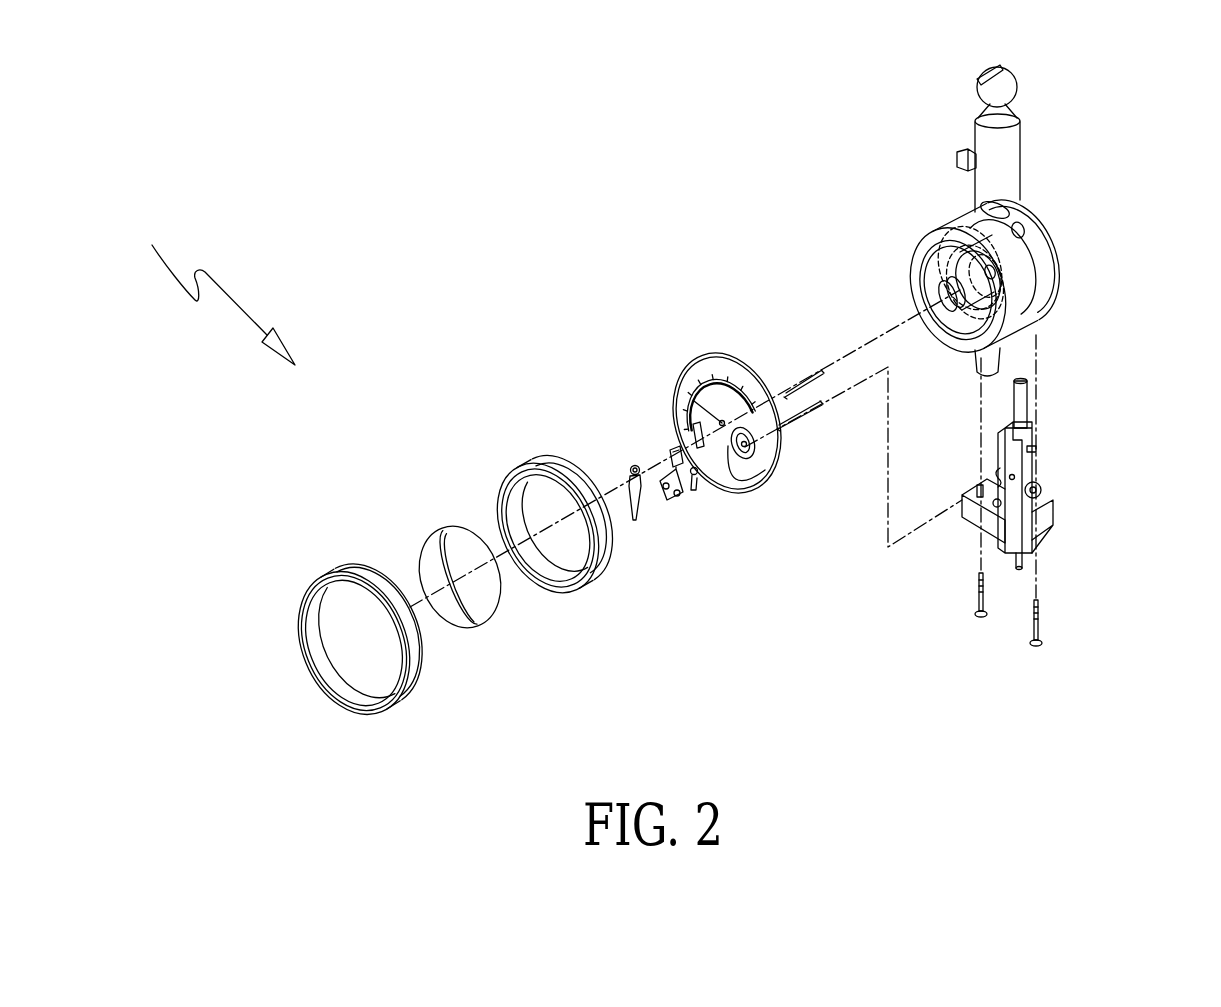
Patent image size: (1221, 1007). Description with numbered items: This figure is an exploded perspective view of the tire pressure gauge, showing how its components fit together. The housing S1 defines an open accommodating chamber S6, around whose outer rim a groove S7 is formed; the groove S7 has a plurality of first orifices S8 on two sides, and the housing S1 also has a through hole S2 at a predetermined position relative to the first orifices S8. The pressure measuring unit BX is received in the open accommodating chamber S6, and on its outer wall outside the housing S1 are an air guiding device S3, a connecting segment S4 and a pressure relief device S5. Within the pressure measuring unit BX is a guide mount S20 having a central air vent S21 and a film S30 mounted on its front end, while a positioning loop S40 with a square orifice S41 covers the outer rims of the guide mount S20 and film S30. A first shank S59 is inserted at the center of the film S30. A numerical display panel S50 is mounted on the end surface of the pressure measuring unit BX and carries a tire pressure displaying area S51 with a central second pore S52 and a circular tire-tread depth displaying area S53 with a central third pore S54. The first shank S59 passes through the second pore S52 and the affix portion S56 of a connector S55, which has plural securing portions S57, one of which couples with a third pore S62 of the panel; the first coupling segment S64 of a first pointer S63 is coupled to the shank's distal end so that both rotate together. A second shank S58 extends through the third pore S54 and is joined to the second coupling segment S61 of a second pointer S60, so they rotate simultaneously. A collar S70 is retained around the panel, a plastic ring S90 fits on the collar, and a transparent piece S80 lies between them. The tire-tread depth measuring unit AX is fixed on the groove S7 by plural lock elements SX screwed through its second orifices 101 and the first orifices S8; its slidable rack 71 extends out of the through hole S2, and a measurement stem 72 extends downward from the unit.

The pressure measuring unit BX is at (211, 286).
The tire-tread depth measuring unit AX is at (1082, 487).
The housing S1 is at (1062, 277).
The through hole S2 is at (1024, 232).
The air guiding device S3 is at (1004, 152).
The connecting segment S4 is at (976, 77).
The pressure relief device S5 is at (957, 158).
The open accommodating chamber S6 is at (940, 297).
The groove S7 is at (995, 358).
The first orifices S8 is at (1052, 320).
The guide mount S20 is at (1060, 252).
The air vent S21 is at (998, 205).
The film S30 is at (950, 226).
The positioning loop S40 is at (940, 272).
The square orifice S41 is at (968, 242).
The numerical display panel S50 is at (693, 353).
The tire pressure displaying area S51 is at (730, 350).
The second pore S52 is at (675, 368).
The tire-tread depth displaying area S53 is at (757, 456).
The third pore S54 is at (758, 443).
The connector S55 is at (671, 454).
The affix portion S56 is at (636, 465).
The securing portions S57 is at (674, 495).
The second shank S58 is at (822, 405).
The first shank S59 is at (803, 385).
The second pointer S60 is at (697, 477).
The second coupling segment S61 is at (697, 476).
The third pore S62 is at (757, 460).
The first pointer S63 is at (632, 478).
The first coupling segment S64 is at (633, 468).
The collar S70 is at (505, 494).
The transparent piece S80 is at (437, 538).
The plastic ring S90 is at (343, 567).
The slidable rack 71 is at (1027, 400).
The measurement stem 72 is at (1017, 570).
The second orifices 101 is at (1042, 518).
The lock elements SX is at (977, 600).